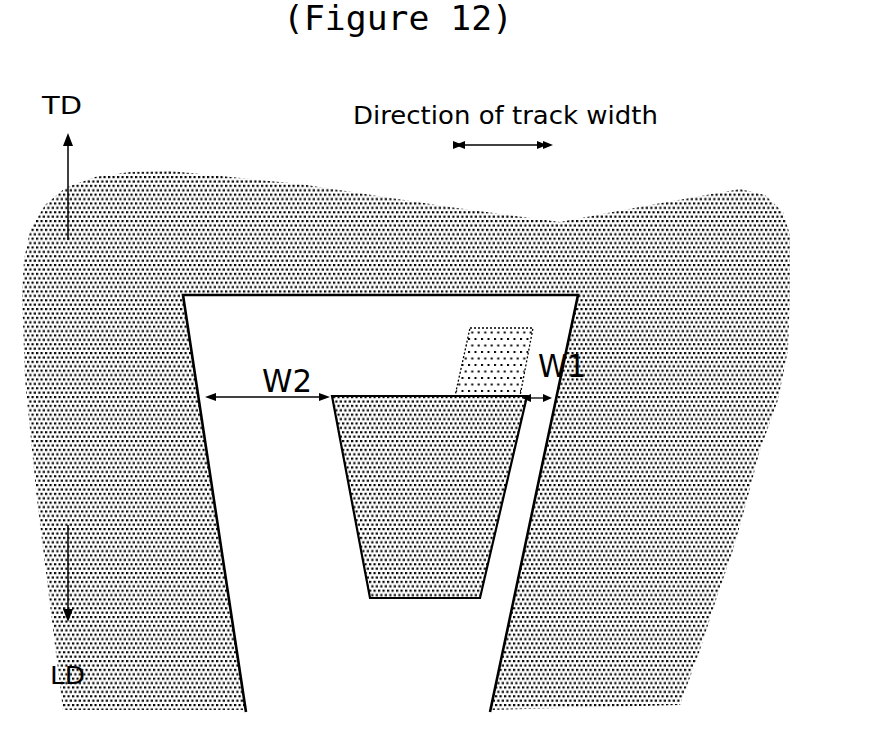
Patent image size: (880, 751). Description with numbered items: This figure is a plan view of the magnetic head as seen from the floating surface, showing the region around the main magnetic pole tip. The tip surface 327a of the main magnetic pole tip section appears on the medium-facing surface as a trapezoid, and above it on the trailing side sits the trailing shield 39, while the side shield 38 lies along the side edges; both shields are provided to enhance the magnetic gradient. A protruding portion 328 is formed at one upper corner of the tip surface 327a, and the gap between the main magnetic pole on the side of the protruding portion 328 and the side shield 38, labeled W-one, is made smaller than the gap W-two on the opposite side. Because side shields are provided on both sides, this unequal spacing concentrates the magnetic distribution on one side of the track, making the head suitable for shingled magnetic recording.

The trailing shield 39 is at (406, 233).
The side shield 38 is at (406, 503).
The tip surface 327a is at (429, 497).
The protruding portion 328 is at (476, 362).